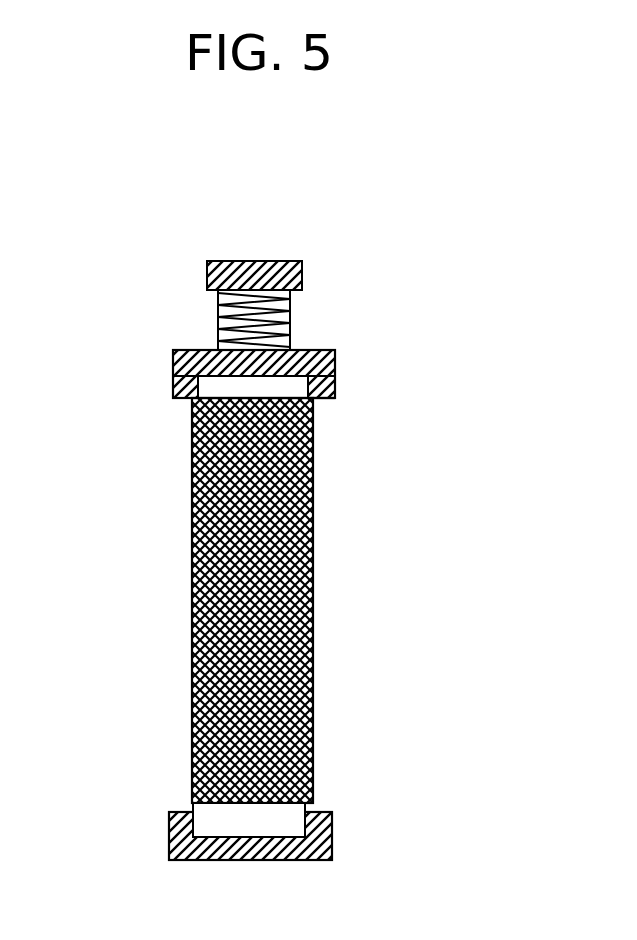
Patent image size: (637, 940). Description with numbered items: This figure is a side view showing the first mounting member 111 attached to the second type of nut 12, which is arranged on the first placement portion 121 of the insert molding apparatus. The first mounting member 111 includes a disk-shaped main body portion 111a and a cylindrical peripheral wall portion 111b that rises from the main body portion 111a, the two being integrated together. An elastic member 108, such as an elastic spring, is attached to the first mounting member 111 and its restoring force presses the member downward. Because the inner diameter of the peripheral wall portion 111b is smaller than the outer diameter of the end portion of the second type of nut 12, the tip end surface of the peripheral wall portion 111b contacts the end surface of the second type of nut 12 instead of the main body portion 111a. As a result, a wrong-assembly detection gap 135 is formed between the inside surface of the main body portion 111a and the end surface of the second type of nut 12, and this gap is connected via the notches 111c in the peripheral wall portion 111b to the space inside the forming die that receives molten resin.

The elastic member 108 is at (274, 312).
The first mounting member 111 is at (186, 350).
The main body portion 111a is at (306, 360).
The peripheral wall portion 111b is at (322, 399).
The notches 111c is at (172, 362).
The wrong-assembly detection gap 135 is at (237, 385).
The second type of nut 12 is at (193, 553).
The first placement portion 121 is at (260, 835).